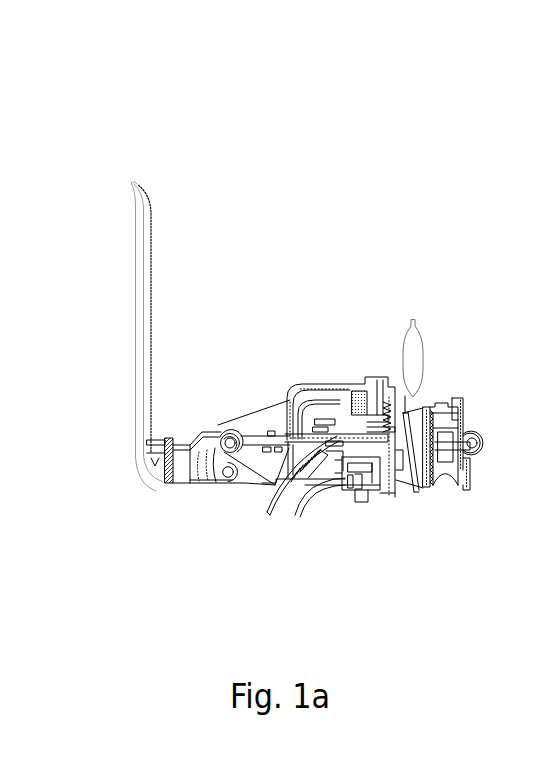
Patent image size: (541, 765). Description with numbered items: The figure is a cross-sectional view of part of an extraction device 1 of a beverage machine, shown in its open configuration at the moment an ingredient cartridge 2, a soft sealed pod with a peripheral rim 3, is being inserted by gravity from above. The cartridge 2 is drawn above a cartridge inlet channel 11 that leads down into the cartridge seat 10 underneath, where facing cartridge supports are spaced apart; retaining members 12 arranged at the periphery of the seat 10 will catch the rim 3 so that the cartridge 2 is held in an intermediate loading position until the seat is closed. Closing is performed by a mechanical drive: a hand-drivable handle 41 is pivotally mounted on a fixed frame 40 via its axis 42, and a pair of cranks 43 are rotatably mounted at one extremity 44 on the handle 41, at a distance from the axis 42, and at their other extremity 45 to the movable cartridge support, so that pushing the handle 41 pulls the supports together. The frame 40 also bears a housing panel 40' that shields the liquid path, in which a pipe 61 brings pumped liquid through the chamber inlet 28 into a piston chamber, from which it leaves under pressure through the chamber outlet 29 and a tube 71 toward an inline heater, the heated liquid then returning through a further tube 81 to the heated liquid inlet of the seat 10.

The extraction device 1 is at (189, 106).
The ingredient cartridge 2 is at (413, 350).
The rim 3 is at (412, 320).
The cartridge seat 10 is at (411, 470).
The cartridge inlet channel 11 is at (420, 405).
The cartridge retaining members 12 is at (405, 410).
The chamber inlet 28 is at (360, 396).
The chamber outlet 29 is at (352, 497).
The fixed frame 40 is at (227, 418).
The housing panel 40' is at (328, 384).
The handle 41 is at (139, 308).
The axis 42 is at (229, 441).
The cranks 43 is at (484, 449).
The first extremity 44 is at (224, 474).
The second extremity 45 is at (476, 440).
The pipe 61 is at (326, 409).
The tube 71 is at (299, 514).
The tube 81 is at (271, 515).